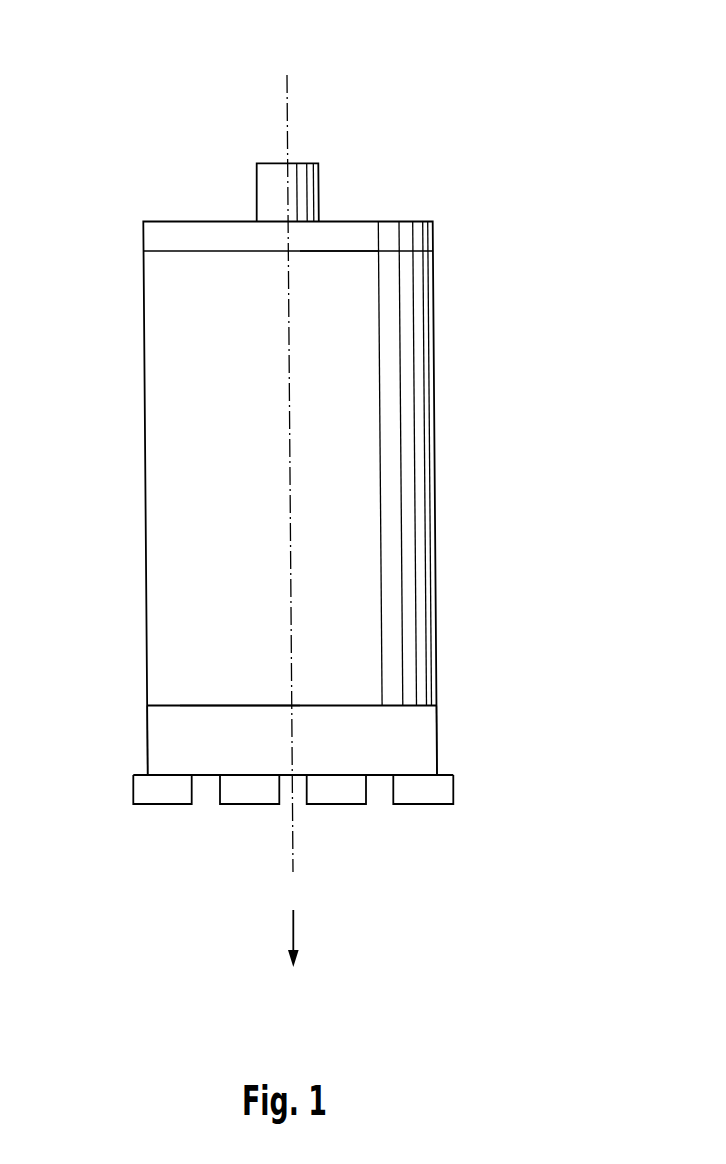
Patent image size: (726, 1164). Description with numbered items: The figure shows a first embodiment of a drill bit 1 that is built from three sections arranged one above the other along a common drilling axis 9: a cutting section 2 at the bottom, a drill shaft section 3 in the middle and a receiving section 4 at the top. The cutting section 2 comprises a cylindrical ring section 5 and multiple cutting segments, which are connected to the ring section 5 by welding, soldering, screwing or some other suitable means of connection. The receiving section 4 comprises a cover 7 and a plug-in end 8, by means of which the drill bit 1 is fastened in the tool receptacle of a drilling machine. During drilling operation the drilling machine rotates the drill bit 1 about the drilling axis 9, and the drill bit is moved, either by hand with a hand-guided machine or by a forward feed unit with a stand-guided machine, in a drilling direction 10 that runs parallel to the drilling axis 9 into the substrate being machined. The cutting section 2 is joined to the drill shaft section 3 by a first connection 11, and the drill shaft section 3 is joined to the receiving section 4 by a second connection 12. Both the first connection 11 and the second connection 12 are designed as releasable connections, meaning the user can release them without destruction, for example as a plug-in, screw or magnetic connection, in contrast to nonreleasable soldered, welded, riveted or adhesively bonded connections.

The drill bit 1 is at (104, 101).
The cutting section 2 is at (104, 741).
The drill shaft section 3 is at (178, 414).
The receiving section 4 is at (90, 193).
The ring section 5 is at (413, 742).
The cover 7 is at (405, 235).
The plug-in end 8 is at (302, 186).
The drilling axis 9 is at (288, 124).
The drilling direction 10 is at (296, 935).
The first connection 11 is at (218, 704).
The second connection 12 is at (326, 252).